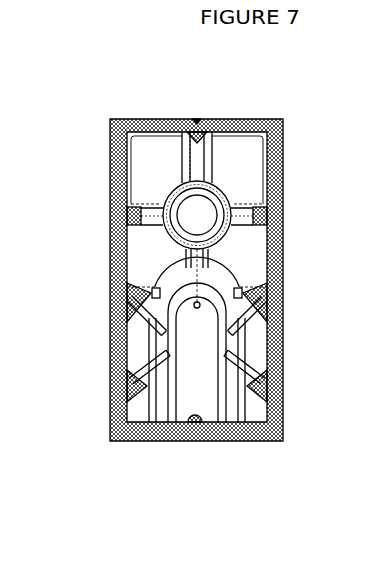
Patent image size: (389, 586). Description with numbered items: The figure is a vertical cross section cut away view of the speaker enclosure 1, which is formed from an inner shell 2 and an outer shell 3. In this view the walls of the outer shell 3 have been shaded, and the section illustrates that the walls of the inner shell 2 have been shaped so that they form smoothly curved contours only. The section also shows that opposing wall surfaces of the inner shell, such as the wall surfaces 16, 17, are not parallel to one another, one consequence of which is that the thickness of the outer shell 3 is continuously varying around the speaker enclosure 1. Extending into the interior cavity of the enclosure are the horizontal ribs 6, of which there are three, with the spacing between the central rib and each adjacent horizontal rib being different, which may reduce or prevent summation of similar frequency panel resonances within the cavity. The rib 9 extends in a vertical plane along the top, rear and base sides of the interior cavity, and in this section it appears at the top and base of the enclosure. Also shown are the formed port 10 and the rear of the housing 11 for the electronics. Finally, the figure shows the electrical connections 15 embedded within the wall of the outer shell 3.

The speaker enclosure 1 is at (300, 117).
The inner shell 2 is at (127, 152).
The outer shell 3 is at (283, 270).
The horizontal ribs 6 is at (133, 292).
The rib 9 is at (197, 116).
The formed port 10 is at (207, 209).
The housing for the electronics 11 is at (200, 362).
The electrical connections 15 is at (118, 323).
The wall surface of the inner shell 16 is at (121, 380).
The wall surface of the inner shell 17 is at (273, 384).